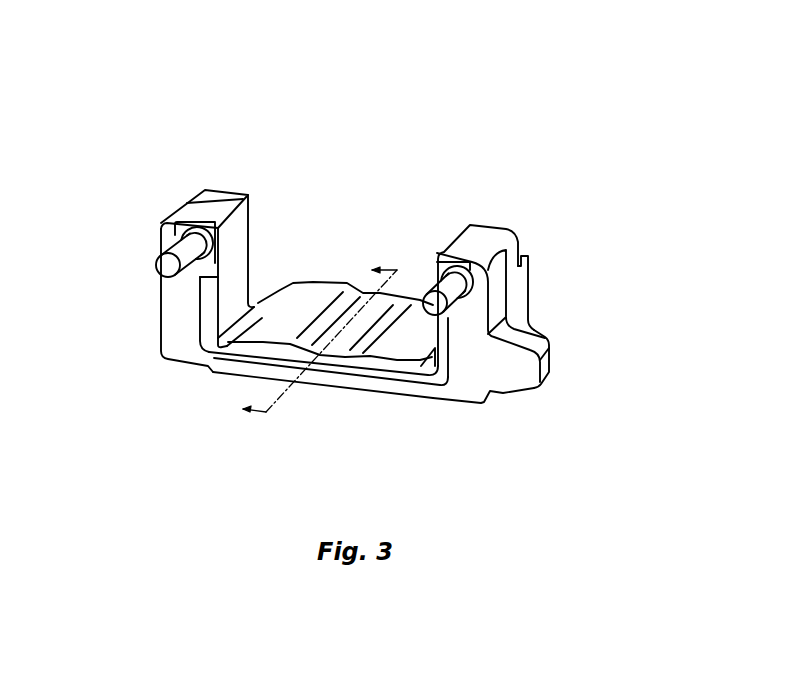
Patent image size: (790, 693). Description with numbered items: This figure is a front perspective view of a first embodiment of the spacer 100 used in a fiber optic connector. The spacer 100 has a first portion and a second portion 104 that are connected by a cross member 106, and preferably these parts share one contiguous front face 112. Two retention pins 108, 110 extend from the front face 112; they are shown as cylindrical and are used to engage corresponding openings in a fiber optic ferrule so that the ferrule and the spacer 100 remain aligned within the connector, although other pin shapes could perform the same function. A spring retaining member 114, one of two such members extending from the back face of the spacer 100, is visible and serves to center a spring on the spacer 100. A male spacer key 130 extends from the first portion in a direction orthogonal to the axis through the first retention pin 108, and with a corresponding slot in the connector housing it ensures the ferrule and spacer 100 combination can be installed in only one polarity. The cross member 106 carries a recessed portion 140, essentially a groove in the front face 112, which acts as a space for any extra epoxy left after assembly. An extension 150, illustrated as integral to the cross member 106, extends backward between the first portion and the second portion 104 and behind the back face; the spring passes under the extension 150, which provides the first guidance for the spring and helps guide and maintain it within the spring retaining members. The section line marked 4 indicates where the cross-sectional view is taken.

The spacer 100 is at (449, 122).
The second portion 104 is at (252, 243).
The cross member 106 is at (323, 378).
The retention pin 108 is at (455, 283).
The retention pin 110 is at (157, 263).
The front face 112 is at (466, 394).
The spring retaining member 114 is at (530, 285).
The male spacer key 130 is at (555, 365).
The recessed portion 140 is at (383, 377).
The extension 150 is at (313, 280).
The section line 4- 4 is at (320, 342).